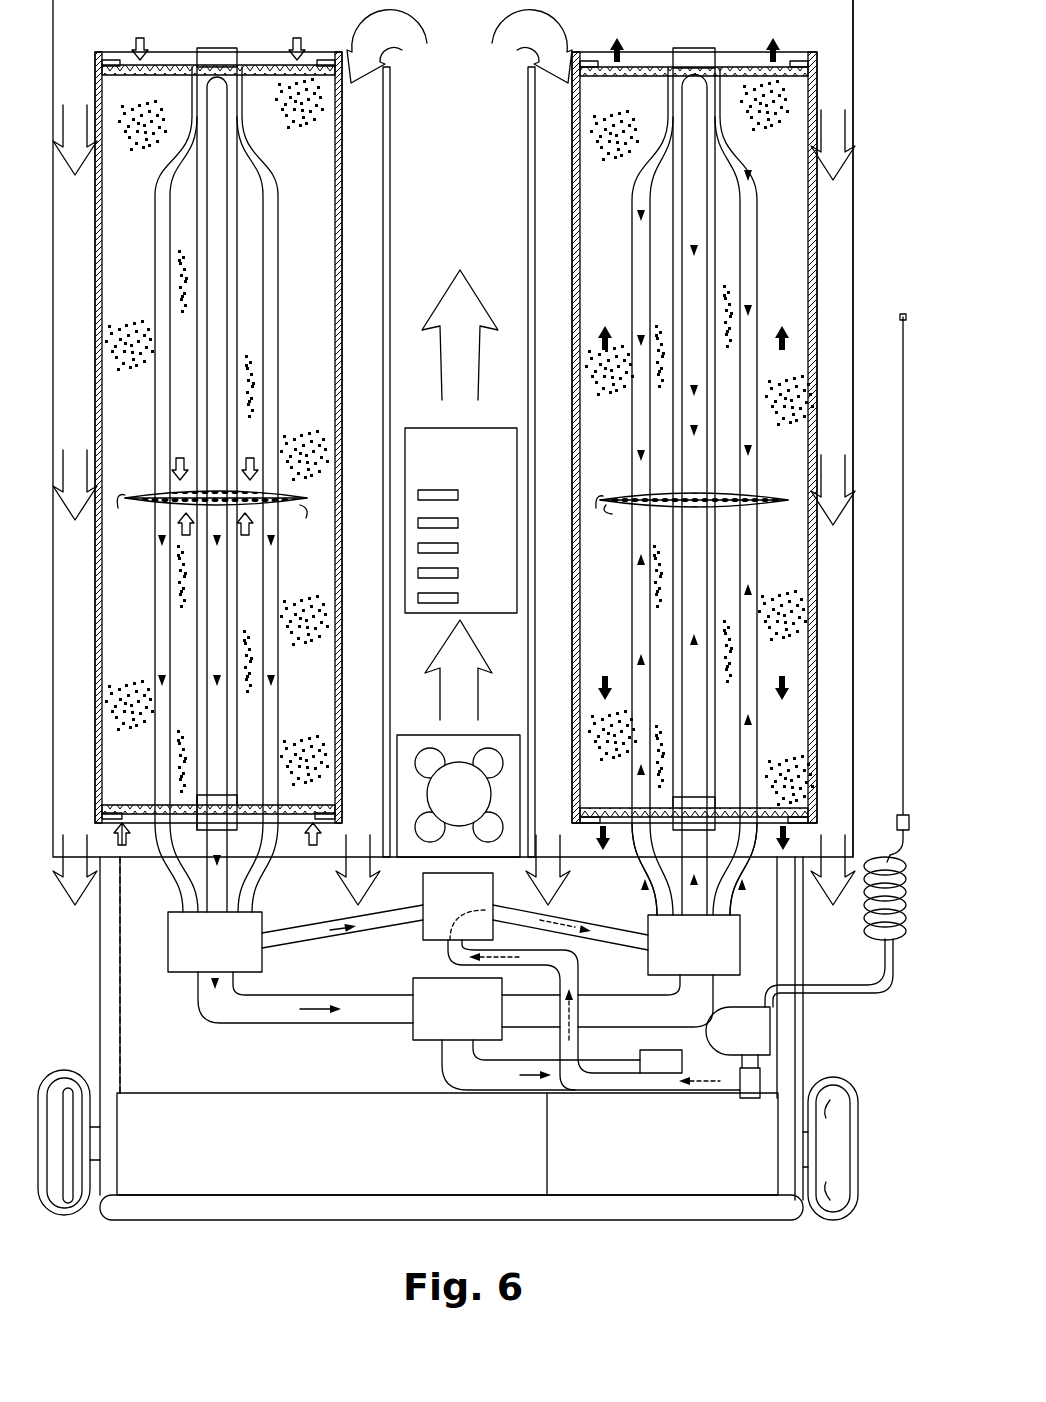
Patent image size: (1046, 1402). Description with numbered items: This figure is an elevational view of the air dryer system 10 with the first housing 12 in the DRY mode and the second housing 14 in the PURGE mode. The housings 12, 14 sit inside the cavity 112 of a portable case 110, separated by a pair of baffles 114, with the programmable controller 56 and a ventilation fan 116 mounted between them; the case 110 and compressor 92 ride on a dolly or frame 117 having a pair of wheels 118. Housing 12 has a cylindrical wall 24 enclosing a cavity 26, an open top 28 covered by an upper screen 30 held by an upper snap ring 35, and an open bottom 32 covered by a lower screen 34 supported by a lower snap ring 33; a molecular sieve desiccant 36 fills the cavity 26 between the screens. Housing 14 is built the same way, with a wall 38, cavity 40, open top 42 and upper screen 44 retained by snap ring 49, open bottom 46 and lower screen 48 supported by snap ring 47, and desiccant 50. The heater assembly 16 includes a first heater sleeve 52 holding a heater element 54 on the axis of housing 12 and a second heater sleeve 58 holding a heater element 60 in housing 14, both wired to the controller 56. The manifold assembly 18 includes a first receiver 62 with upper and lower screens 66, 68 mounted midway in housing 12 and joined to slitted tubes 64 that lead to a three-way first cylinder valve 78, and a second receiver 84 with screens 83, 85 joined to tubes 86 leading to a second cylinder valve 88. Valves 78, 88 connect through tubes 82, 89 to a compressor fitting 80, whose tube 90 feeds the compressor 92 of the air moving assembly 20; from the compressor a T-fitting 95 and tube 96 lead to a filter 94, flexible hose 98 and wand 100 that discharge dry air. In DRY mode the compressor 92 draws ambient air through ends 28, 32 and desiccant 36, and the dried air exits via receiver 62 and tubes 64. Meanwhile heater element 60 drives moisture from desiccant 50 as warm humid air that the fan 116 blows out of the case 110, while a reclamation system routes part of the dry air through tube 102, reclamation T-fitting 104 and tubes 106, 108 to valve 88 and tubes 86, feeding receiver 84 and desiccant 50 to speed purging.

The air dryer system 10 is at (862, 108).
The housing 12 is at (215, 456).
The housing 14 is at (692, 457).
The heater assembly 16 is at (248, 334).
The manifold assembly 18 is at (285, 572).
The air moving assembly 20 is at (733, 1205).
The cylindrical wall 24 is at (95, 285).
The cavity 26 is at (218, 440).
The open top 28 is at (253, 58).
The upper screen 30 is at (180, 66).
The open bottom 32 is at (140, 834).
The lower snap ring 33 is at (100, 830).
The lower screen 34 is at (325, 806).
The upper snap ring 35 is at (112, 62).
The molecular sieve desiccant 36 is at (298, 120).
The cylindrical wall 38 is at (575, 208).
The cavity 40 is at (653, 462).
The open top 42 is at (651, 58).
The upper screen 44 is at (745, 66).
The open bottom 46 is at (765, 830).
The lower snap ring 47 is at (578, 830).
The lower screen 48 is at (588, 812).
The upper snap ring 49 is at (795, 62).
The molecular sieve desiccant 50 is at (598, 733).
The first heater sleeve 52 is at (250, 422).
The heater element 54 is at (205, 812).
The programmable controller 56 is at (461, 520).
The second heater sleeve 58 is at (714, 258).
The heater element 60 is at (668, 822).
The first receiver 62 is at (148, 494).
The tubes 64 is at (210, 620).
The upper screen 66 is at (118, 508).
The lower screen 68 is at (306, 518).
The first cylinder valve 78 is at (215, 942).
The compressor fitting 80 is at (457, 1009).
The tube 82 is at (282, 1027).
The upper screen 83 is at (608, 496).
The second receiver 84 is at (765, 497).
The lower screen 85 is at (603, 525).
The tubes 86 is at (640, 628).
The second cylinder valve 88 is at (694, 945).
The tube 89 is at (607, 1001).
The tube 90 is at (445, 1067).
The compressor 92 is at (447, 1144).
The filter 94 is at (738, 1031).
The T-fitting 95 is at (748, 1095).
The tube 96 is at (682, 1062).
The flexible hose 98 is at (860, 912).
The wand 100 is at (903, 316).
The tube 102 is at (578, 985).
The reclamation T-fitting 104 is at (458, 906).
The tube 106 is at (312, 932).
The tube 108 is at (600, 933).
The portable case 110 is at (855, 228).
The cavity 112 is at (460, 462).
The baffles 114 is at (388, 200).
The ventilation fan 116 is at (458, 796).
The dolly or frame 117 is at (100, 968).
The wheels 118 is at (62, 1072).